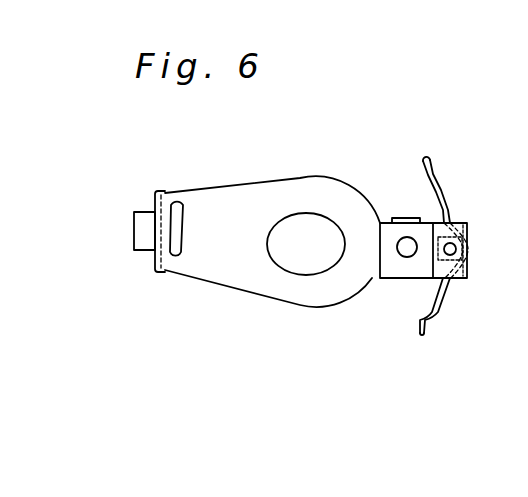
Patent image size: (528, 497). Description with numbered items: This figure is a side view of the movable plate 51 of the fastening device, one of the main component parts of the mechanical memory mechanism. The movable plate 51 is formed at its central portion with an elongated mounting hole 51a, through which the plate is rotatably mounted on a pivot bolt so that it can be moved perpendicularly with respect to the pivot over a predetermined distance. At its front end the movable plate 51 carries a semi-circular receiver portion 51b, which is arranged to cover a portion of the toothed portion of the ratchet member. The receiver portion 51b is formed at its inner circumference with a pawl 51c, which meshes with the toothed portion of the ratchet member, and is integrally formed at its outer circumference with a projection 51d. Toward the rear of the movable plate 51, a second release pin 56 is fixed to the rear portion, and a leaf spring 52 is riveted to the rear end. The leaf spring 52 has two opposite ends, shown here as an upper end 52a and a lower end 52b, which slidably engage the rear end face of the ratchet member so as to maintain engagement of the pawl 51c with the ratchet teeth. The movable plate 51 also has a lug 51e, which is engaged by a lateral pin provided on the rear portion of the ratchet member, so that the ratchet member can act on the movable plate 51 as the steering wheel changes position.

The movable plate 51 is at (303, 181).
The elongated mounting hole 51a is at (302, 270).
The semi-circular receiver portion 51b is at (172, 215).
The pawl 51c is at (163, 250).
The projection 51d is at (143, 225).
The lug 51e is at (402, 218).
The leaf spring 52 is at (452, 198).
The upper spring end 52a is at (424, 160).
The lower spring end 52b is at (419, 336).
The second release pin 56 is at (404, 256).